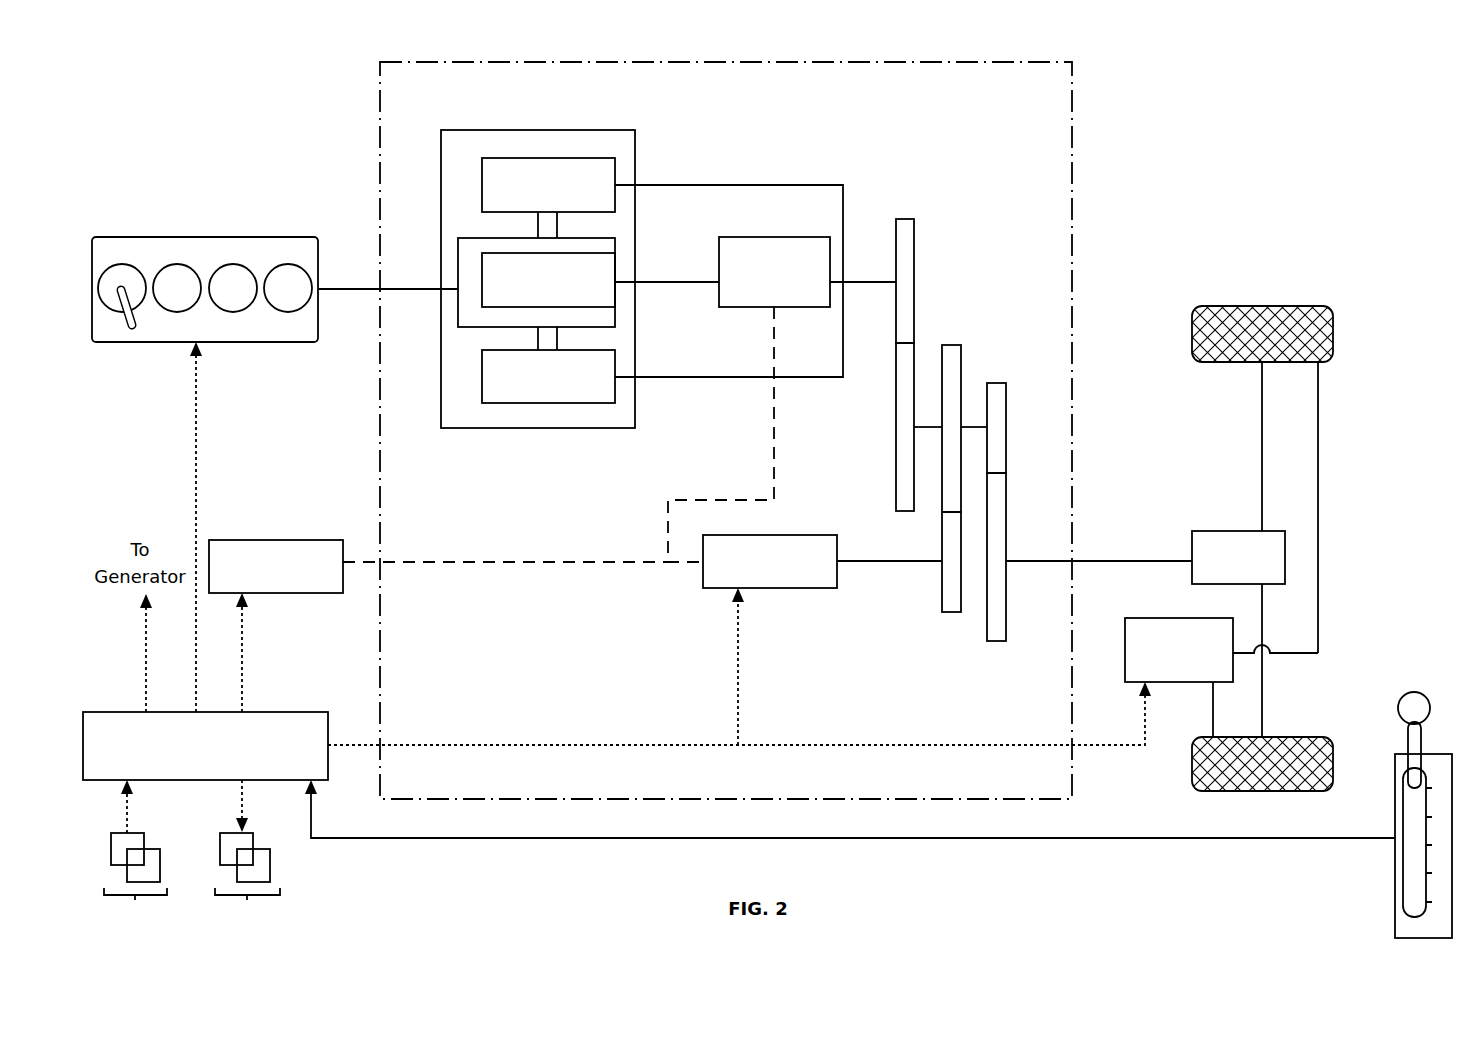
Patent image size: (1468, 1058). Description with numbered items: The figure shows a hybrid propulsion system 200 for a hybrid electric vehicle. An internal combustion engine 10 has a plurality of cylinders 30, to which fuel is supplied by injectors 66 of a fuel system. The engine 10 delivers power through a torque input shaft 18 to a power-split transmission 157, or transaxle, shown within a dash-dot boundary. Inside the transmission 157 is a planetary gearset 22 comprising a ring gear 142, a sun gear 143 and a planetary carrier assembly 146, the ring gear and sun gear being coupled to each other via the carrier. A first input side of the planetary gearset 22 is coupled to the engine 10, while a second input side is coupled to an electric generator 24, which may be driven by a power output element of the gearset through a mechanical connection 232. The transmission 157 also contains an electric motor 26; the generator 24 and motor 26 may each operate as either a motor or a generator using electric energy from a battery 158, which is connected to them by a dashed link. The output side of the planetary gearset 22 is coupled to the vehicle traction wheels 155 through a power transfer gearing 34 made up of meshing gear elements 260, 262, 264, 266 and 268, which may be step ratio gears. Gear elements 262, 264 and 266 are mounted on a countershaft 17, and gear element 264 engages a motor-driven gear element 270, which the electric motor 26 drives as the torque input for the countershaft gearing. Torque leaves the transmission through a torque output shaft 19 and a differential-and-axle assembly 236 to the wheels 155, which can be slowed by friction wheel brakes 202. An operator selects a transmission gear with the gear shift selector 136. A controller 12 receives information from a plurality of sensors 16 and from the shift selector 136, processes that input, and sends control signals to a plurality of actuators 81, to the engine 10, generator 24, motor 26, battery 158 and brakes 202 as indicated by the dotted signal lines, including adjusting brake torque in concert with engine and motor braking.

The internal combustion engine 10 is at (205, 289).
The cylinders 30 is at (108, 268).
The injectors 66 is at (125, 330).
The torque input shaft 18 is at (322, 289).
The planetary gearset 22 is at (538, 261).
The ring gear 142 is at (548, 280).
The sun gear 143 is at (548, 280).
The planetary carrier assembly 146 is at (552, 244).
The mechanical connection 232 is at (650, 282).
The electric generator 24 is at (774, 272).
The meshing gear element 260 is at (906, 219).
The gear element 262 is at (898, 445).
The gear element 264 is at (950, 345).
The gear element 266 is at (1006, 410).
The meshing gear element 268 is at (996, 641).
The electric motor-driven gear element 270 is at (951, 615).
The countershaft 17 is at (930, 427).
The power transfer gearing 34 is at (988, 213).
The transmission 157 is at (1072, 115).
The hybrid propulsion system 200 is at (1290, 153).
The electric motor 26 is at (770, 561).
The battery 158 is at (276, 566).
The controller 12 is at (205, 746).
The sensors 16 is at (129, 863).
The actuators 81 is at (243, 863).
The torque output shaft 19 is at (1098, 561).
The differential-and-axle assembly 236 is at (1238, 557).
The friction wheel brakes 202 is at (1221, 677).
The vehicle traction wheels 155 is at (1245, 306).
The gear shift selector 136 is at (1403, 695).